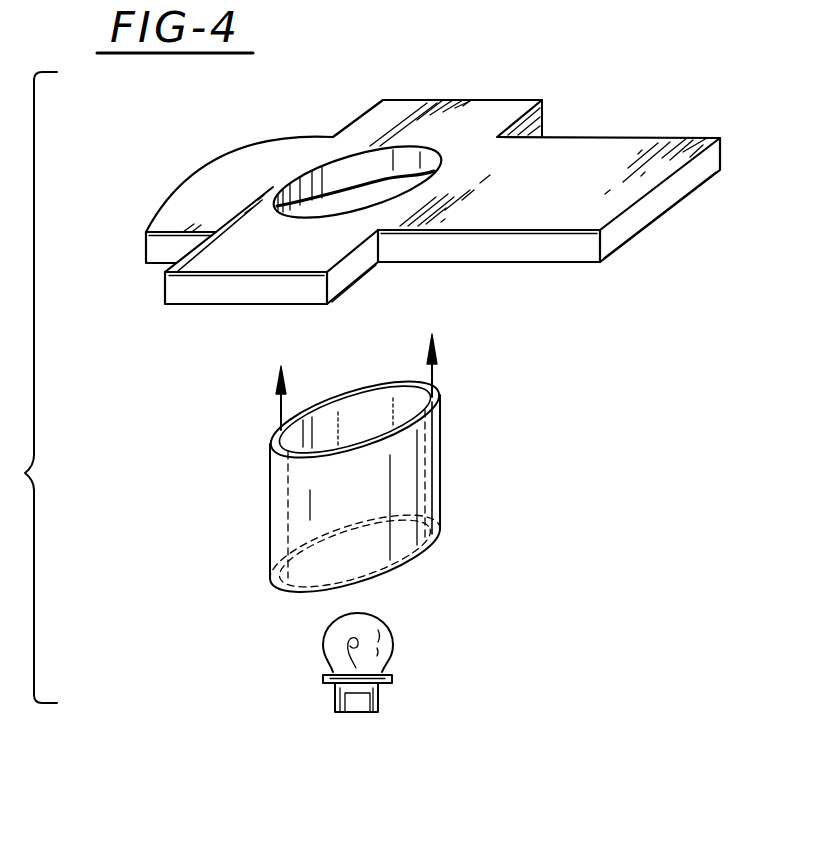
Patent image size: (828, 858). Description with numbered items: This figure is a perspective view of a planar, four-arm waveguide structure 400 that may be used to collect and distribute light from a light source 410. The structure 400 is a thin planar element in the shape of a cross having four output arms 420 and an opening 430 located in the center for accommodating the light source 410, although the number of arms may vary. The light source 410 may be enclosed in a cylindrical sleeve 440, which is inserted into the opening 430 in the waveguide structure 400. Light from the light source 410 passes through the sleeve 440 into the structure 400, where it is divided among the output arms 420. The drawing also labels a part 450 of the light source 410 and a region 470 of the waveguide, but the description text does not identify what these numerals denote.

The waveguide structure 400 is at (590, 94).
The light source 410 is at (391, 679).
The output arms 420 is at (234, 253).
The opening 430 is at (352, 195).
The cylindrical sleeve 440 is at (443, 435).
The bulb base 450 is at (379, 700).
The bracket plate 470 is at (147, 203).